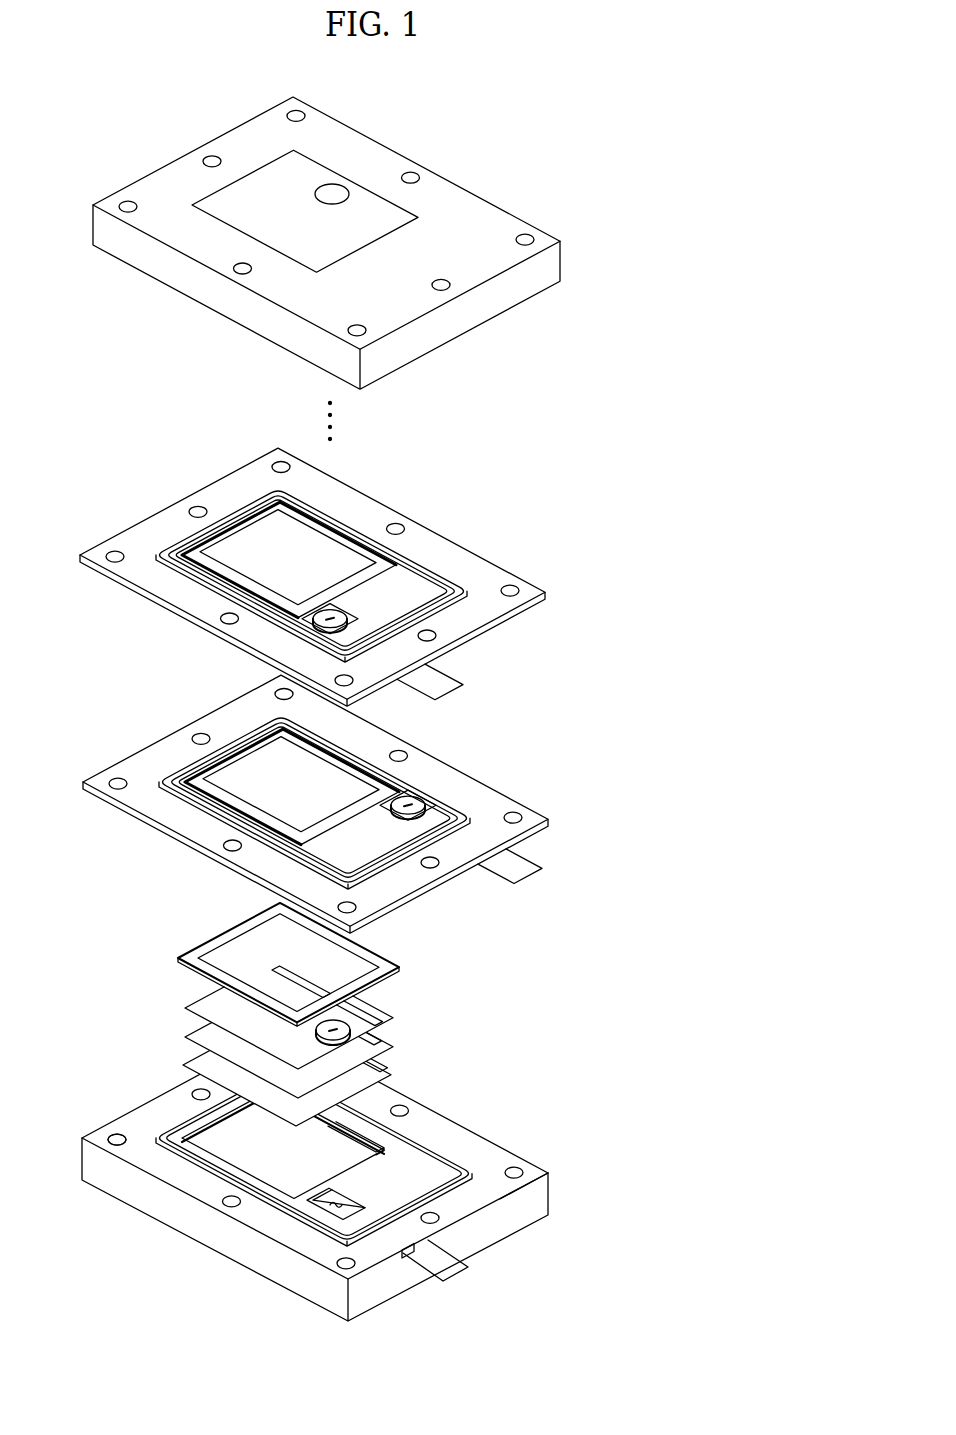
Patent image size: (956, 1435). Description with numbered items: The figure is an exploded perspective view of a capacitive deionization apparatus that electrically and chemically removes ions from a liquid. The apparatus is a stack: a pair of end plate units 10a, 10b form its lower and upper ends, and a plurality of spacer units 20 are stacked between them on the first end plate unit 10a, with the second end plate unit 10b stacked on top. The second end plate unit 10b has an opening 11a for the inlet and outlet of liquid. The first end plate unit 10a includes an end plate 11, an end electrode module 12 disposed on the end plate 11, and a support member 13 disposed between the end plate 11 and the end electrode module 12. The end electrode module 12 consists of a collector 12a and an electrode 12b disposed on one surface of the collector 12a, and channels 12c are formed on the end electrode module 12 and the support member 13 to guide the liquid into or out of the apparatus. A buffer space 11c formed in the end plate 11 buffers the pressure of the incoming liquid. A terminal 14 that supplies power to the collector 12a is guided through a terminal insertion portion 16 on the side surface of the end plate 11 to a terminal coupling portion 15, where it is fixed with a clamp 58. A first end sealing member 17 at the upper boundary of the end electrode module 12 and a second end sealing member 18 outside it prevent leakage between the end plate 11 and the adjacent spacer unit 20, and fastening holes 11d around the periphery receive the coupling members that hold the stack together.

The first end plate unit 10a is at (376, 1178).
The second end plate unit 10b is at (382, 243).
The end plate 11 is at (533, 1212).
The opening 11a is at (338, 190).
The buffer space 11c is at (372, 1148).
The fastening holes 11d is at (117, 1136).
The end electrode module 12 is at (347, 1013).
The collector 12a is at (393, 1044).
The electrode 12b is at (393, 1013).
The channels 12c is at (312, 992).
The support member 13 is at (393, 1072).
The terminal 14 is at (463, 1266).
The terminal coupling portion 15 is at (340, 1208).
The terminal insertion portion 16 is at (406, 1258).
The first end sealing member 17 is at (388, 962).
The second end sealing member 18 is at (300, 1210).
The spacer units 20 is at (556, 586).
The clamp 58 is at (345, 1030).